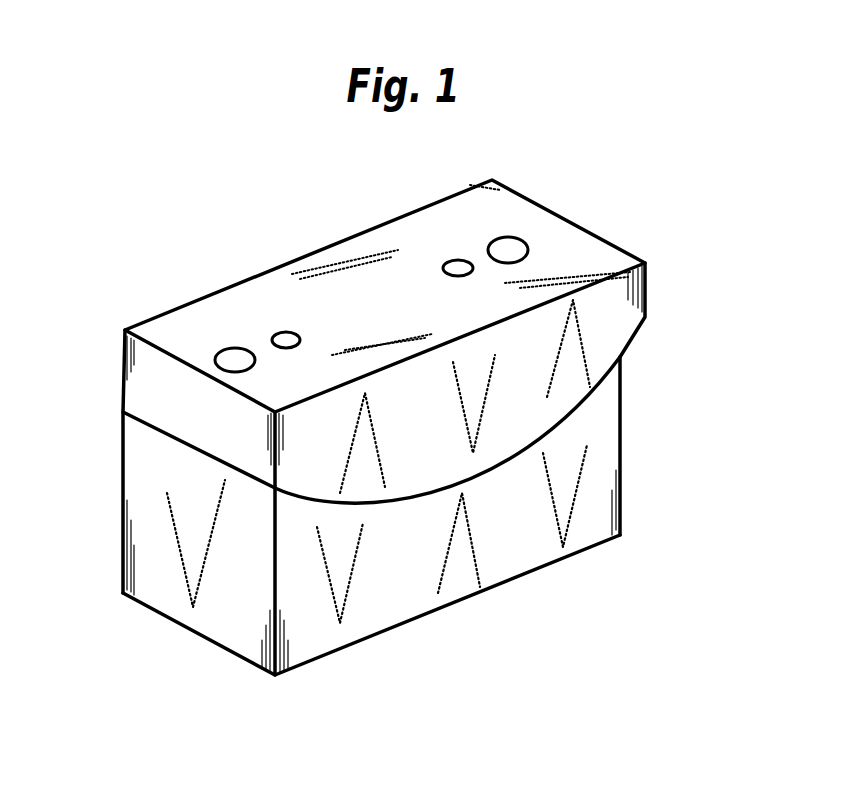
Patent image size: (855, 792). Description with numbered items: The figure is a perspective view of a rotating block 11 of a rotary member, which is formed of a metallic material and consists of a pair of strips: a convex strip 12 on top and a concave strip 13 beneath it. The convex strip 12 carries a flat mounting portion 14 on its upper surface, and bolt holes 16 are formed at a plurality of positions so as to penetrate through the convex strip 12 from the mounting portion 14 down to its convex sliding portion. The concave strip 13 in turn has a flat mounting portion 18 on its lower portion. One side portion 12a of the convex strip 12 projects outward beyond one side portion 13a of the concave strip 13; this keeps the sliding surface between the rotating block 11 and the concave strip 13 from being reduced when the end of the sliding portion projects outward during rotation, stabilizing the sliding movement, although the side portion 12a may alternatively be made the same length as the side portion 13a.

The rotating block 11 is at (589, 182).
The convex strip 12 is at (369, 224).
The one side portion of the convex strip 12a is at (647, 290).
The concave strip 13 is at (495, 594).
The one side portion of the concave strip 13a is at (622, 447).
The mounting portion 14 is at (327, 288).
The bolt holes 16 is at (226, 347).
The mounting portion 18 is at (420, 618).